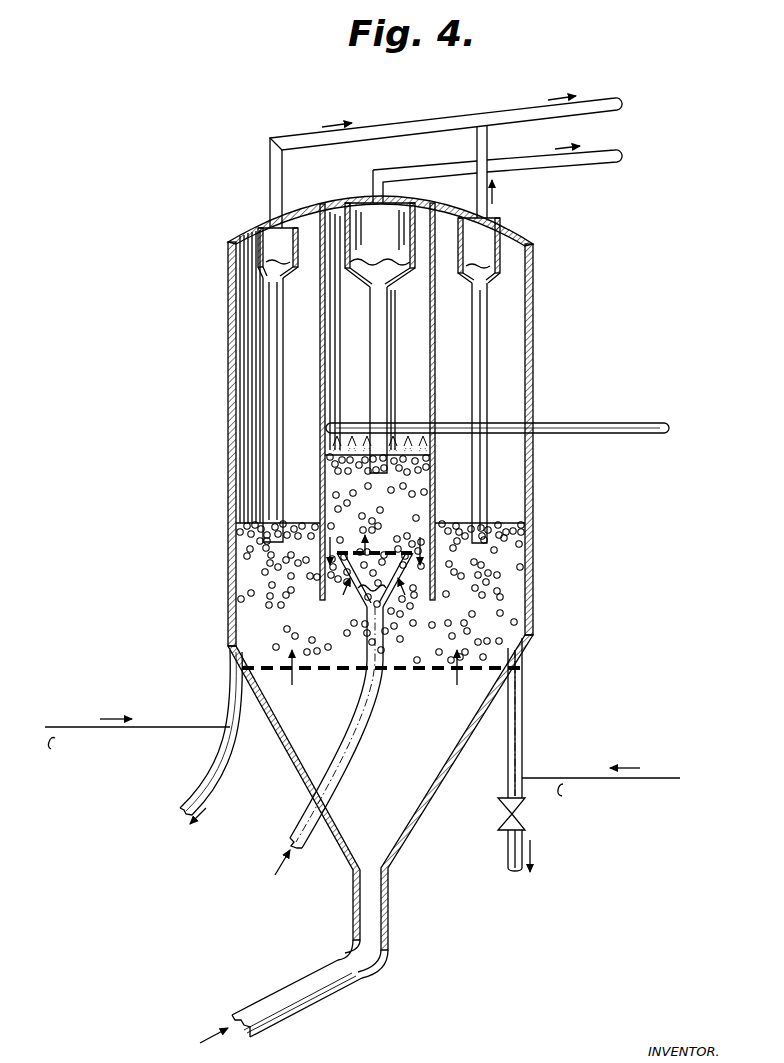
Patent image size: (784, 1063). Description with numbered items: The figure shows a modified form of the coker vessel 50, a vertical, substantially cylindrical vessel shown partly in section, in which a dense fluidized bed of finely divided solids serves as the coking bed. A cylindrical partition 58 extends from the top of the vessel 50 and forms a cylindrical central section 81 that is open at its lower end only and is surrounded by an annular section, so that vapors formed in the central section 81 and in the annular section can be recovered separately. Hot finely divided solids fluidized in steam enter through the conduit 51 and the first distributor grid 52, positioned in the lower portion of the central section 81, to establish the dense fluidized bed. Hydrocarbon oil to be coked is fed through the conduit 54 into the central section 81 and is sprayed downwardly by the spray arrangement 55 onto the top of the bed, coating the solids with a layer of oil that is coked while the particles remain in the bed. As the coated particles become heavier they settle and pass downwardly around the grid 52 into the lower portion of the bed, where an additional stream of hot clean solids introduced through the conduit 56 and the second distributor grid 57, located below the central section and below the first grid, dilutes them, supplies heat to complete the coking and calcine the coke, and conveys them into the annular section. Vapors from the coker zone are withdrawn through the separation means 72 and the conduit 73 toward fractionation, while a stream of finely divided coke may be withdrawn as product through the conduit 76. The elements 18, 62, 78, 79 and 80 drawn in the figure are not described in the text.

The cyclone separator 18 is at (490, 277).
The coker vessel 50 is at (533, 496).
The conduit 51 is at (293, 821).
The first distributor grid 52 is at (387, 552).
The conduit 54 is at (583, 423).
The spray arrangement 55 is at (418, 420).
The conduit 56 is at (286, 981).
The second distributor grid 57 is at (407, 667).
The cylindrical partition 58 is at (225, 780).
The stripping steam inlet line 62 is at (75, 722).
The separation means 72 is at (395, 285).
The conduit 73 is at (551, 167).
The conduit 76 is at (523, 683).
The cyclone separator 78 is at (292, 277).
The gas conduit 79 is at (269, 184).
The gas outlet header 80 is at (418, 122).
The cylindrical central section 81 is at (414, 365).